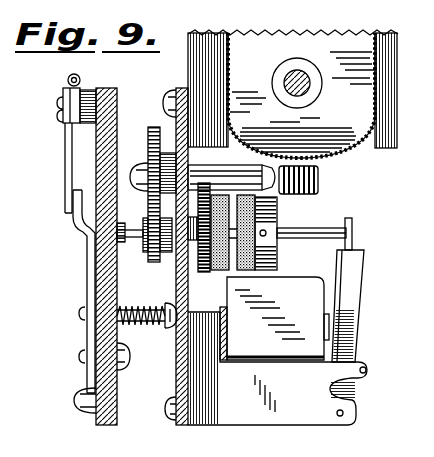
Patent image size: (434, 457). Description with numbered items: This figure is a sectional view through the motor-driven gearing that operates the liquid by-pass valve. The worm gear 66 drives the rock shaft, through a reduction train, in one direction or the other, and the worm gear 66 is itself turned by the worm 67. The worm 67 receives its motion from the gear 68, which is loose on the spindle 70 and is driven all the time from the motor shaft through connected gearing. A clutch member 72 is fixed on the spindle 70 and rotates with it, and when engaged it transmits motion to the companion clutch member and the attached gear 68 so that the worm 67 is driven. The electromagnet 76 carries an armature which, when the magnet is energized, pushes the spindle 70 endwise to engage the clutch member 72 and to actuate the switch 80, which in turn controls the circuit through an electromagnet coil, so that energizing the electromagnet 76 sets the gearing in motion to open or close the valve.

The worm gear 66 is at (293, 94).
The worm 67 is at (320, 190).
The gear 68 is at (200, 261).
The spindle 70 is at (309, 234).
The clutch member 72 is at (222, 277).
The electromagnet 76 is at (265, 332).
The switch 80 is at (77, 221).